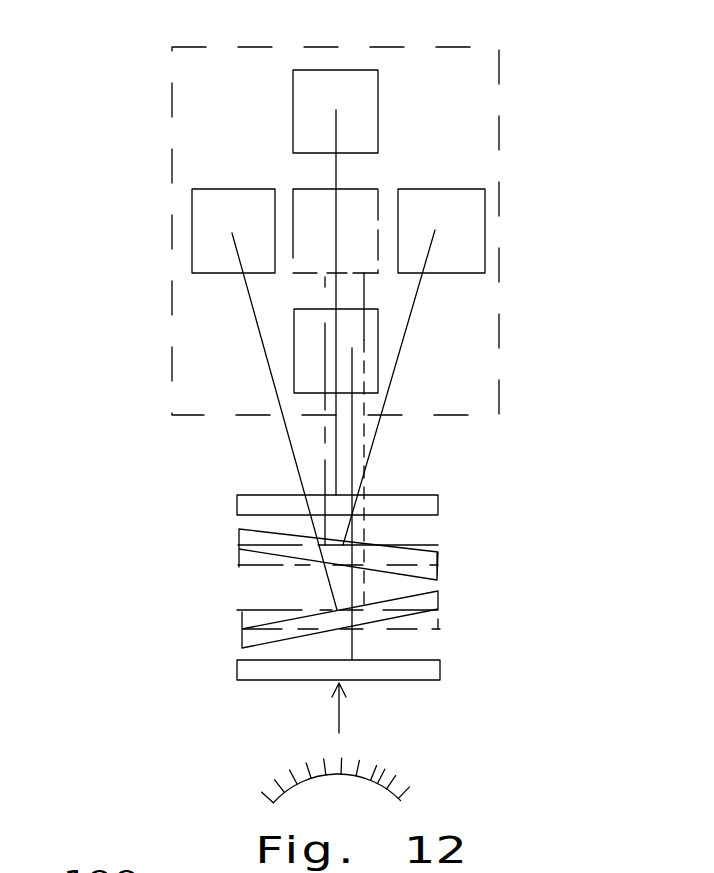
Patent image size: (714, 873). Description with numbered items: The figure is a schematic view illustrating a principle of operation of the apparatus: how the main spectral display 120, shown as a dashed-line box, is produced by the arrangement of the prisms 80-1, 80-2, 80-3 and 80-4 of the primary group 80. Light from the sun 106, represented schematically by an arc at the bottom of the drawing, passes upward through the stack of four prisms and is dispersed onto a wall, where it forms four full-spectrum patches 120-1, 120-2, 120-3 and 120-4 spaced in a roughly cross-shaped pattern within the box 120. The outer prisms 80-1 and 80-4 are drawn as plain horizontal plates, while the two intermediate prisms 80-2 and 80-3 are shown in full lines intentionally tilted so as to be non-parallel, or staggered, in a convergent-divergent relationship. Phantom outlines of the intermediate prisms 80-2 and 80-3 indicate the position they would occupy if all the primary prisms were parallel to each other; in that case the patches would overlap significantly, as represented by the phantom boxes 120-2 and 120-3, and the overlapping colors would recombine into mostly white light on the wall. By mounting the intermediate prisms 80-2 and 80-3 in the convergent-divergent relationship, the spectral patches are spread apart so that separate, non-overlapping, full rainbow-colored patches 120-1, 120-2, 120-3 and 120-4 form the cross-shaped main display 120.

The main spectral display 120 is at (170, 83).
The full-spectrum patch 120-1 is at (445, 21).
The full-spectrum patch 120-2 is at (192, 222).
The full-spectrum patch 120-3 is at (518, 303).
The full-spectrum patch 120-4 is at (308, 309).
The primary group 80 is at (523, 533).
The prism 80-1 is at (237, 496).
The intermediate prism 80-2 is at (237, 558).
The intermediate prism 80-3 is at (237, 645).
The prism 80-4 is at (237, 662).
The sun 106 is at (450, 737).